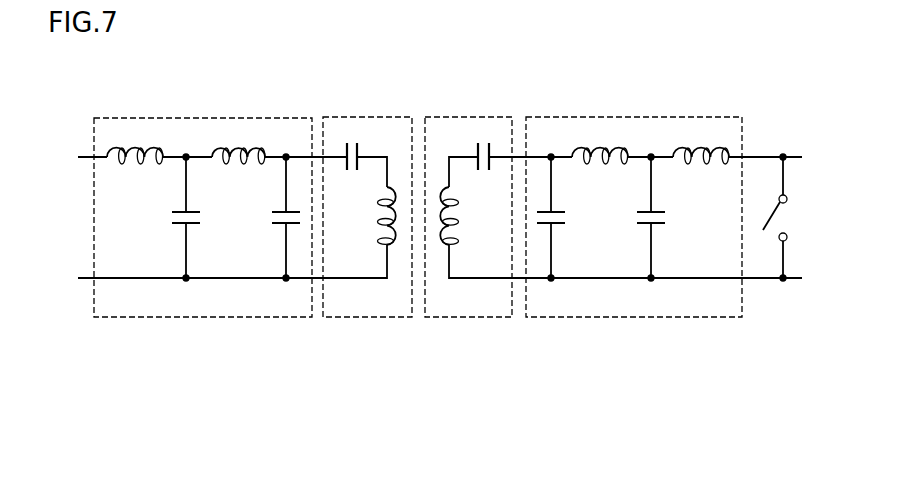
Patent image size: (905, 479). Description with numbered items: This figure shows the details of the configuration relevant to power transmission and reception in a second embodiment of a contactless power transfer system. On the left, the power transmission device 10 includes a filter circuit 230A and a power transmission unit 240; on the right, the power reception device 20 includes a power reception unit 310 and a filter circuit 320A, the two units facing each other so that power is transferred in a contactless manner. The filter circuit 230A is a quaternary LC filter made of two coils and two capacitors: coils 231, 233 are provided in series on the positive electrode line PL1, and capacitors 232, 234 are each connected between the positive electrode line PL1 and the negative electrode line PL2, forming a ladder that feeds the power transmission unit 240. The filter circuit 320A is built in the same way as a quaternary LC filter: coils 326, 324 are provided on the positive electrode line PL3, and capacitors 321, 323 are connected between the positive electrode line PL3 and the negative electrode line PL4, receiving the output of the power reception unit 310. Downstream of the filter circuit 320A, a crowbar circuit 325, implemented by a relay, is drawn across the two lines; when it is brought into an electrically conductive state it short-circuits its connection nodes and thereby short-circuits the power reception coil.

The power transmission device 10 is at (307, 391).
The power reception device 20 is at (533, 392).
The filter circuit 230A is at (204, 117).
The coil 231 is at (140, 147).
The capacitor 232 is at (177, 224).
The coil 233 is at (253, 147).
The capacitor 234 is at (278, 224).
The power transmission unit 240 is at (370, 117).
The power reception unit 310 is at (470, 117).
The filter circuit 320A is at (634, 117).
The capacitor 321 is at (560, 224).
The capacitor 323 is at (660, 224).
The coil 324 is at (702, 150).
The crowbar circuit 325 is at (767, 237).
The coil 326 is at (602, 148).
The positive electrode line PL1 is at (298, 156).
The negative electrode line PL2 is at (338, 279).
The positive electrode line PL3 is at (562, 156).
The negative electrode line PL4 is at (497, 279).